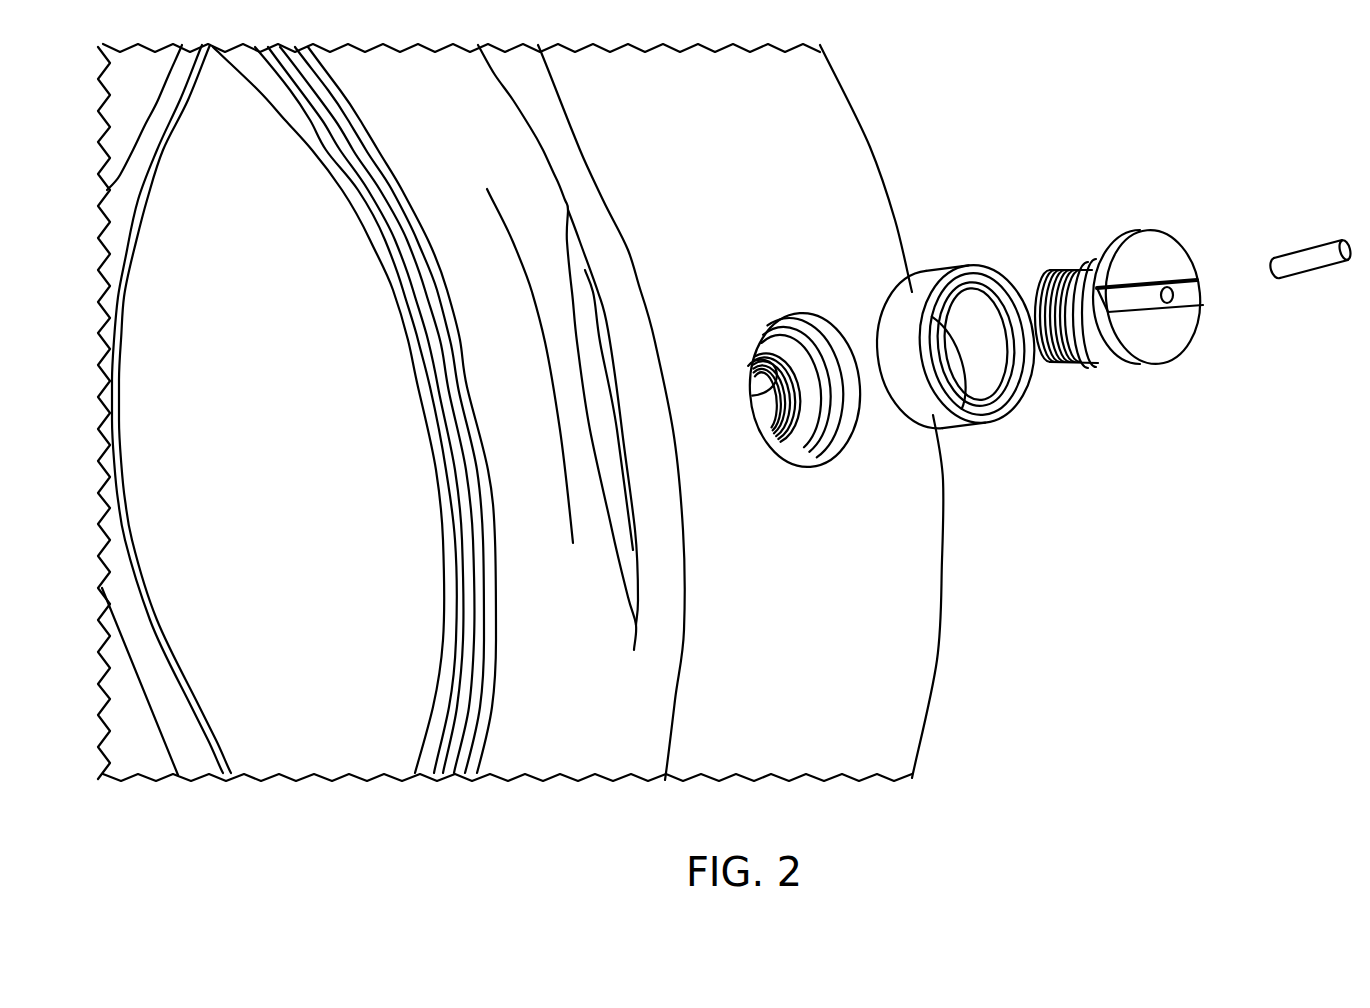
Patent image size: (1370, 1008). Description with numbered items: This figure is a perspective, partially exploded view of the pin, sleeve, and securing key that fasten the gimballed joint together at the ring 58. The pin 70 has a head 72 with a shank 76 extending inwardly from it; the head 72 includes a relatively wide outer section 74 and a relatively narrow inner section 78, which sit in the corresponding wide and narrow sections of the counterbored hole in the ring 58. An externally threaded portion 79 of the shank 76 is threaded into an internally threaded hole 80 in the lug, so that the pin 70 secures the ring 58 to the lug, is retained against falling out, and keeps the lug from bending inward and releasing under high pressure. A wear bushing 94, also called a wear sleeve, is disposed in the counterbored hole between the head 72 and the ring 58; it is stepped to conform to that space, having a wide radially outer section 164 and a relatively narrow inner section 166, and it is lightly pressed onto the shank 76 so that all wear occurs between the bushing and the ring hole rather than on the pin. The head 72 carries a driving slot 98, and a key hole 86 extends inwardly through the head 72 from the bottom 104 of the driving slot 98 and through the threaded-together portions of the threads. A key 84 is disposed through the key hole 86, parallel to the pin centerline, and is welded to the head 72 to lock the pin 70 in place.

The ring 58 is at (917, 702).
The internally threaded hole 80 is at (752, 353).
The wear bushing 94 is at (929, 337).
The wide radially outer section 164 is at (940, 269).
The narrow inner section 166 is at (886, 320).
The pin 70 is at (1135, 296).
The head 72 is at (1180, 256).
The wide outer section 74 is at (1118, 232).
The shank 76 is at (1093, 367).
The narrow inner section 78 is at (1100, 258).
The externally threaded portion 79 is at (1088, 365).
The key hole 86 is at (1190, 292).
The driving slot 98 is at (1146, 292).
The bottom of driving slot 104 is at (1063, 273).
The key 84 is at (1316, 273).